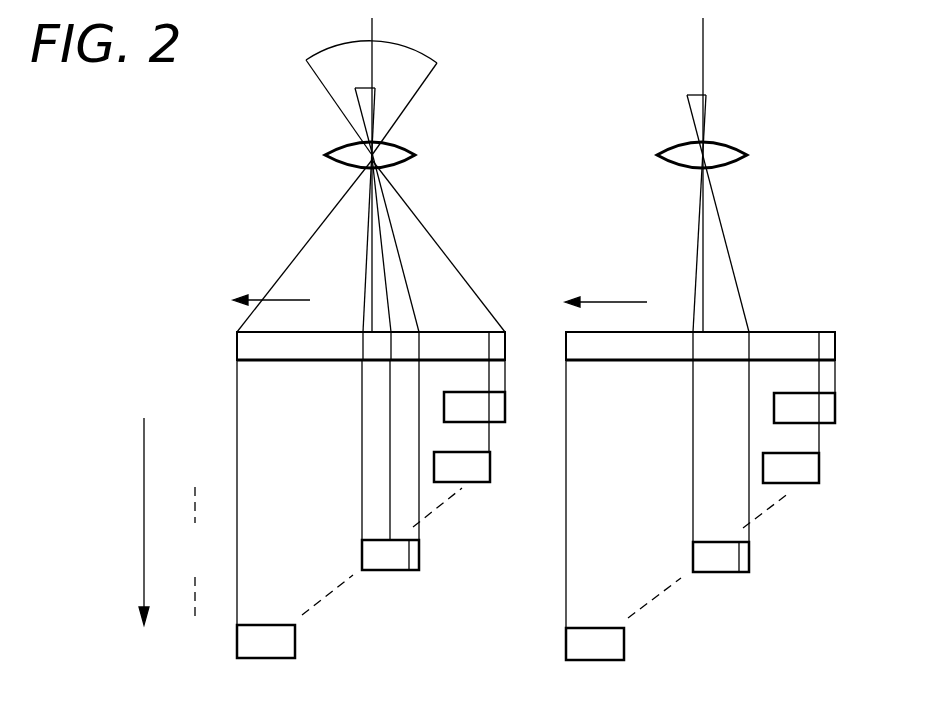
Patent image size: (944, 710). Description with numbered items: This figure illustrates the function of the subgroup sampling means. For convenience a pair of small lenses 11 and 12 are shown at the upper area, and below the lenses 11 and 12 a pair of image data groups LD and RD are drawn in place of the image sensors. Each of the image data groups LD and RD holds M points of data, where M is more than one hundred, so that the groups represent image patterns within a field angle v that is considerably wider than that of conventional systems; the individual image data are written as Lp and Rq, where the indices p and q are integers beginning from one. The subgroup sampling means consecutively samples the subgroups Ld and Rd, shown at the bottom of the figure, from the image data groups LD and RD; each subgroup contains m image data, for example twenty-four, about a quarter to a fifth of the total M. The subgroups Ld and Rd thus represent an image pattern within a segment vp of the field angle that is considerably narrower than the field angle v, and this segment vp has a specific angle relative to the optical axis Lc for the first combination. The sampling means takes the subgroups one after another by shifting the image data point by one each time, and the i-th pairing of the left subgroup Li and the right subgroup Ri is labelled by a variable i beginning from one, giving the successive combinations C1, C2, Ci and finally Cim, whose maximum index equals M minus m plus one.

The lens 11 is at (416, 155).
The lens 12 is at (748, 155).
The optical axis Lc is at (374, 33).
The field angle v is at (322, 47).
The segment of the field angle vp is at (360, 88).
The image data index P is at (271, 289).
The image data index q is at (606, 292).
The image data group LD is at (452, 332).
The image data group RD is at (783, 332).
The left subgroup Ld is at (420, 558).
The right subgroup Rd is at (750, 558).
The left subgroup Li is at (414, 571).
The right subgroup Ri is at (745, 573).
The first combination of subgroups C1 is at (338, 407).
The second combination of subgroups C2 is at (331, 467).
The i-th combination of subgroups Ci is at (184, 553).
The last combination of subgroups Cim is at (231, 641).
The combination variable i is at (144, 447).